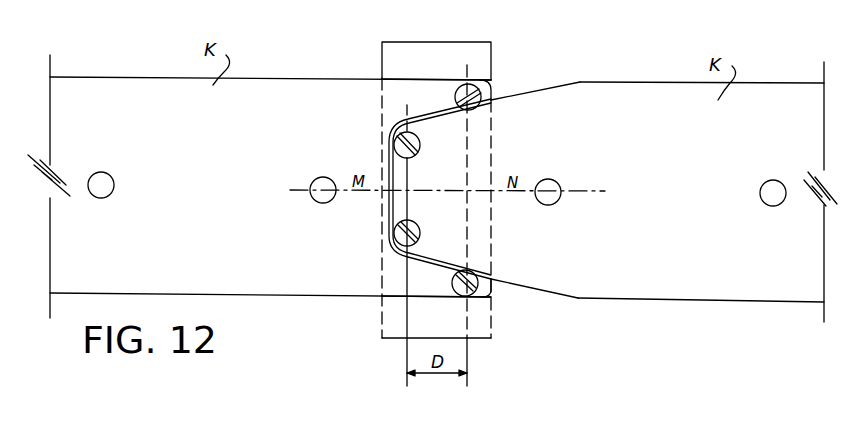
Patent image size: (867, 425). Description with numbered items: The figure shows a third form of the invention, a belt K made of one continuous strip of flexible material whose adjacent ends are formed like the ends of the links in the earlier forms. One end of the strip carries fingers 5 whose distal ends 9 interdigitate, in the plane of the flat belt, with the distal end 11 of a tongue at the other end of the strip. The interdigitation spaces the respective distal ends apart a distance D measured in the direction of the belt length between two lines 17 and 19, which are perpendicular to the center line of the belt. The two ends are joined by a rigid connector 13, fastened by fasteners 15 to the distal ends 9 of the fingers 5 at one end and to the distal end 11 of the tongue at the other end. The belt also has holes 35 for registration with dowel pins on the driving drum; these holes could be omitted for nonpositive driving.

The fingers 5 is at (436, 188).
The distal ends of fingers 9 is at (493, 99).
The distal end of tongue 11 is at (398, 208).
The connector 13 is at (433, 47).
The fasteners 15 is at (468, 110).
The line 17 is at (470, 235).
The line 19 is at (406, 255).
The holes 35 is at (125, 162).